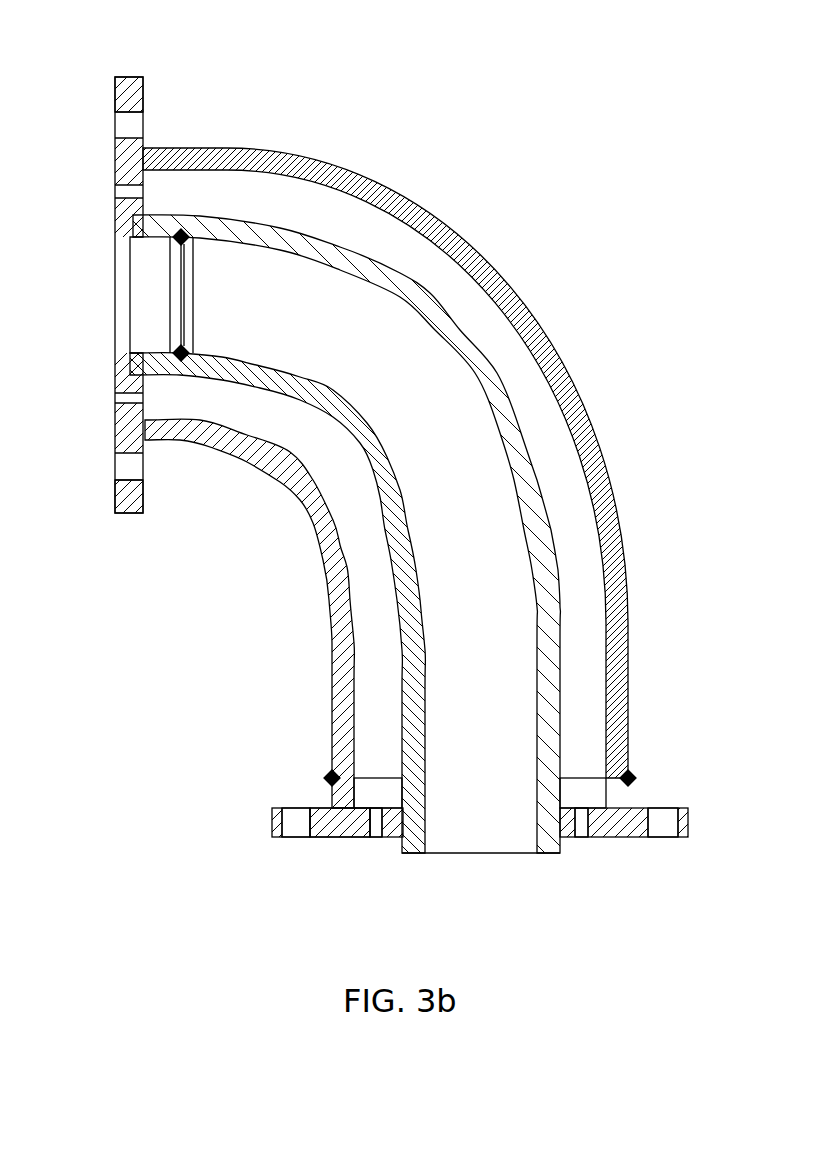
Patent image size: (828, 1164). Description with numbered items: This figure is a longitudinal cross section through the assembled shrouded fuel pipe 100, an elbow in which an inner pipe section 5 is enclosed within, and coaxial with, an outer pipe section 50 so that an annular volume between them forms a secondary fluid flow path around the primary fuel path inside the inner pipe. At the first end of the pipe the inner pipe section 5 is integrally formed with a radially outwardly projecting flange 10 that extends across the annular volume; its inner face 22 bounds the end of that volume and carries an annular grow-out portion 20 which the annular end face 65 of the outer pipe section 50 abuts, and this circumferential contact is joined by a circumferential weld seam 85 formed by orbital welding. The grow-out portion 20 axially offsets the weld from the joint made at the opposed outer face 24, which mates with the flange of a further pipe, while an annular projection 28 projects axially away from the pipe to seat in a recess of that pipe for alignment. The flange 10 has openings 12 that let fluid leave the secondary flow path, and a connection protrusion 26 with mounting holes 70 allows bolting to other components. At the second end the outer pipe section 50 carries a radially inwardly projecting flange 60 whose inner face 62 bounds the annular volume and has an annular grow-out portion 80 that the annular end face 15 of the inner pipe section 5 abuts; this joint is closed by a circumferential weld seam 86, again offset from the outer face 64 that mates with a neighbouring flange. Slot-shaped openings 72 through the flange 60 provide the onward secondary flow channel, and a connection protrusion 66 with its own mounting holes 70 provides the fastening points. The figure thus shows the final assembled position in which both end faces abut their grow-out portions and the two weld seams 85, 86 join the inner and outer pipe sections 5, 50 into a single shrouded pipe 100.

The shrouded fuel pipe 100 is at (576, 283).
The inner pipe section 5 is at (548, 532).
The annular end face 15 is at (192, 219).
The outer pipe section 50 is at (594, 430).
The annular grow-out portion 80 is at (161, 215).
The inwardly projecting flange 60 is at (131, 372).
The inner face 62 is at (152, 382).
The outer face 64 is at (129, 412).
The connection protrusion 66 is at (127, 77).
The openings 72 is at (116, 192).
The circumferential weld seam 86 is at (172, 250).
The circumferential weld seam 85 is at (327, 776).
The annular grow-out portion 20 is at (637, 781).
The inner face 22 is at (410, 793).
The annular end face 65 is at (573, 793).
The connection protrusion 26 is at (273, 824).
The outwardly projecting flange 10 is at (607, 840).
The mounting hole 70 is at (298, 838).
The outer face 24 is at (346, 838).
The openings 12 is at (377, 838).
The annular projection 28 is at (547, 855).